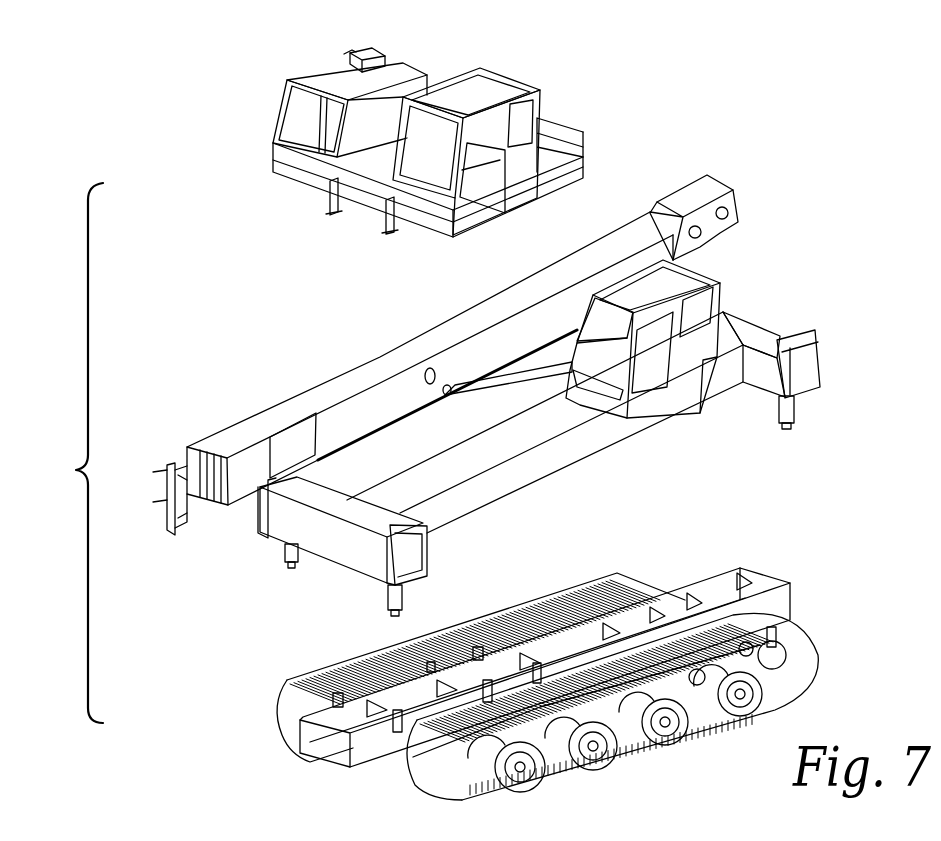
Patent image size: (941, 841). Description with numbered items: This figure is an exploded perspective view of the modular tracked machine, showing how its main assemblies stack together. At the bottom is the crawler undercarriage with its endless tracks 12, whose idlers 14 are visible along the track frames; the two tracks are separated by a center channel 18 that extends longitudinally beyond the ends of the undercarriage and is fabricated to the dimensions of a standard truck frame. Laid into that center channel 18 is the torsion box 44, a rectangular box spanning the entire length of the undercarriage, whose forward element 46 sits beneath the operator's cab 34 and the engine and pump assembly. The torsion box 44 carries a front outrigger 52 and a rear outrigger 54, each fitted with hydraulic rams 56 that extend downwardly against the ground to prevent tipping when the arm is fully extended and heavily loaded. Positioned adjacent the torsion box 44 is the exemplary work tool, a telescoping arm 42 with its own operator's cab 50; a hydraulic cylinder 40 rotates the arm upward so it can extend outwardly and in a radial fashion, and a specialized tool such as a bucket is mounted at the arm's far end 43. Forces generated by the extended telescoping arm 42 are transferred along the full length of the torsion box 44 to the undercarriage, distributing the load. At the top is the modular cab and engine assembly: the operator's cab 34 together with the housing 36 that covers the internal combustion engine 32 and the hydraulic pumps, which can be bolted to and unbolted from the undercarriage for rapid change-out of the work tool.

The endless tracks 12 is at (643, 760).
The idlers 14 is at (528, 793).
The center channel 18 is at (747, 580).
The internal combustion engine 32 is at (348, 55).
The operator's cab 34 is at (517, 87).
The housing 36 is at (413, 72).
The hydraulic cylinder 40 is at (480, 392).
The telescoping arm 42 is at (370, 365).
The far end 43 is at (167, 508).
The torsion box 44 is at (520, 483).
The forward element 46 is at (437, 488).
The operator's cab 50 is at (710, 297).
The front outrigger 52 is at (323, 548).
The rear outrigger 54 is at (778, 333).
The hydraulic rams 56 is at (790, 413).